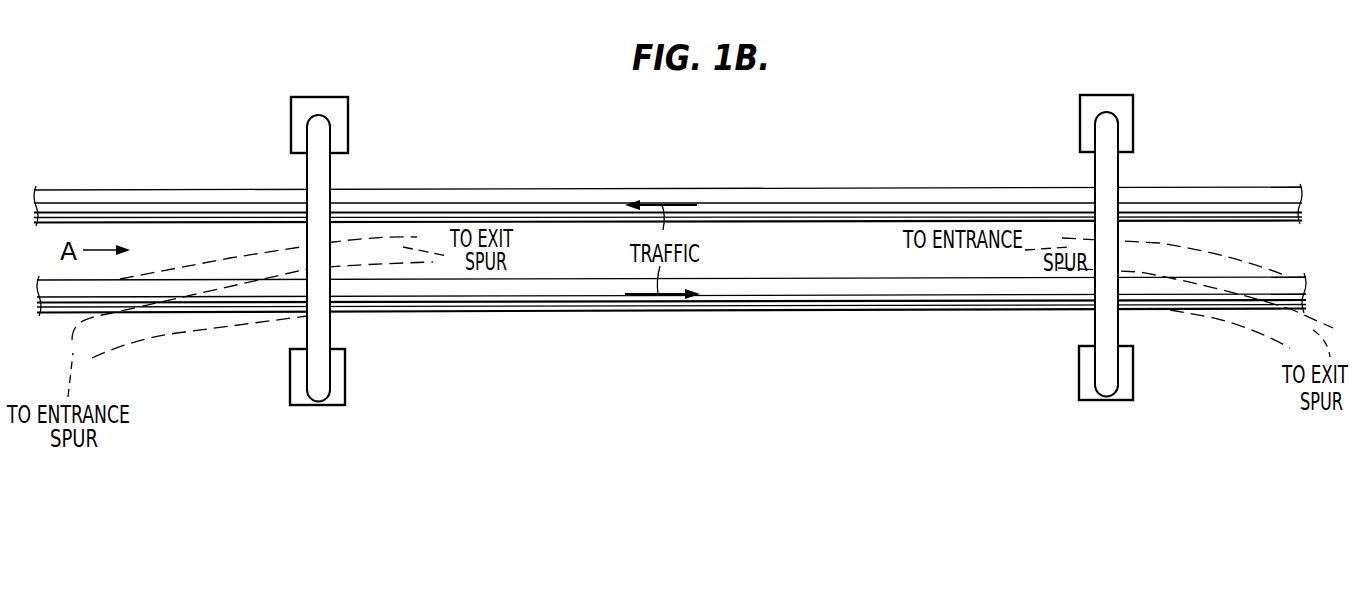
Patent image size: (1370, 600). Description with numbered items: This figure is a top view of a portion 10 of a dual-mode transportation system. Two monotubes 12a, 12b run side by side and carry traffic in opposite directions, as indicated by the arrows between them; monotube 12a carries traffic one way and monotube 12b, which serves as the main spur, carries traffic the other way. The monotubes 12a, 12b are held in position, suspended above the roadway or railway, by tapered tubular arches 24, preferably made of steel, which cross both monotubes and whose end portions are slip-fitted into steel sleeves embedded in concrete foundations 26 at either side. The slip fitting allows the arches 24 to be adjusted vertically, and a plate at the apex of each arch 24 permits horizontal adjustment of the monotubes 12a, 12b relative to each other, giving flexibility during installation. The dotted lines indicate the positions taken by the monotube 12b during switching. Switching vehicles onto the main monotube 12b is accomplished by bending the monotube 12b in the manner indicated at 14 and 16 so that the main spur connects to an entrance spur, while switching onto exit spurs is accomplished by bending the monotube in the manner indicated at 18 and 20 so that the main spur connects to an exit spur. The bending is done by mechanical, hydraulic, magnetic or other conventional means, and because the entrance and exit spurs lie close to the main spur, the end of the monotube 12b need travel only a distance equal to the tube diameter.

The portion of the dual-mode transportation system 10 is at (178, 158).
The monotube 12a is at (808, 197).
The monotube 12b is at (758, 302).
The bending of monotube for entrance spur switching 14 is at (185, 333).
The bending of monotube for entrance spur switching 16 is at (1230, 257).
The bending of monotube for exit spur switching 18 is at (230, 258).
The bending of monotube for exit spur switching 20 is at (1208, 317).
The tapered tubular arch 24 is at (330, 167).
The concrete foundation 26 is at (342, 113).